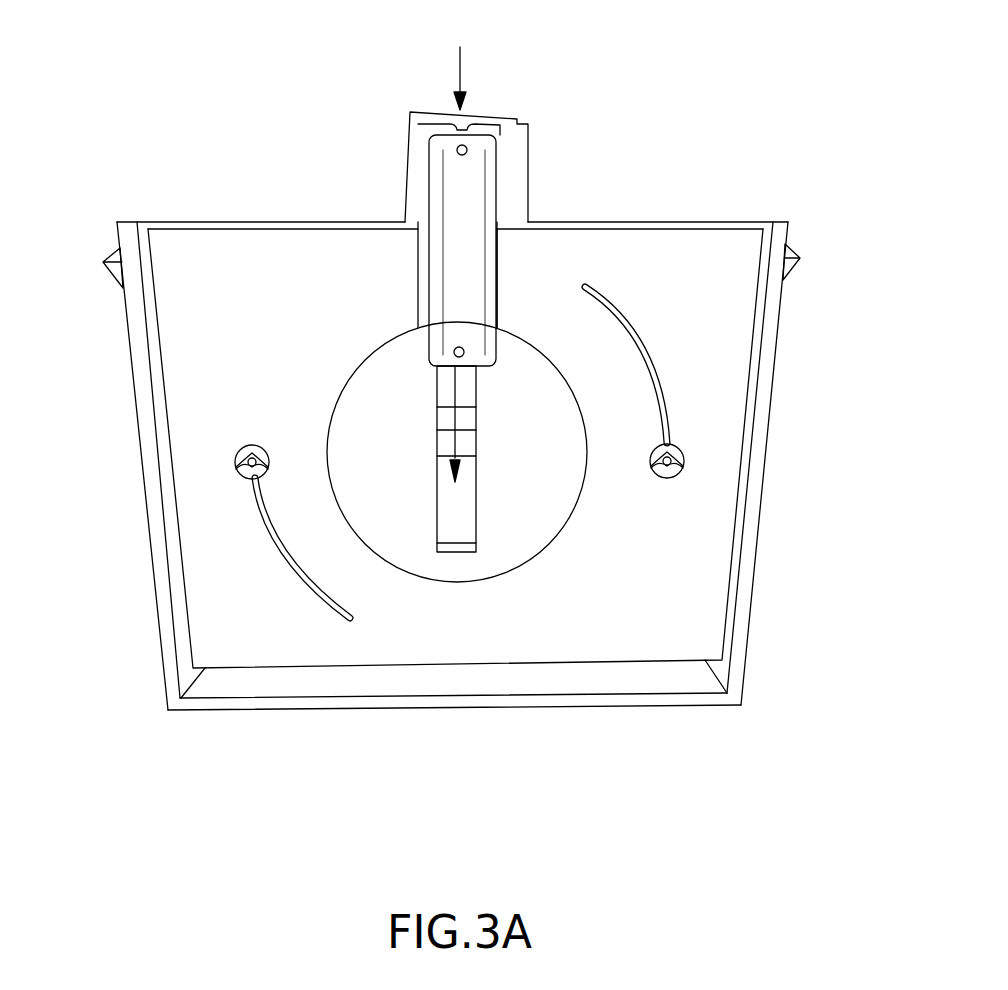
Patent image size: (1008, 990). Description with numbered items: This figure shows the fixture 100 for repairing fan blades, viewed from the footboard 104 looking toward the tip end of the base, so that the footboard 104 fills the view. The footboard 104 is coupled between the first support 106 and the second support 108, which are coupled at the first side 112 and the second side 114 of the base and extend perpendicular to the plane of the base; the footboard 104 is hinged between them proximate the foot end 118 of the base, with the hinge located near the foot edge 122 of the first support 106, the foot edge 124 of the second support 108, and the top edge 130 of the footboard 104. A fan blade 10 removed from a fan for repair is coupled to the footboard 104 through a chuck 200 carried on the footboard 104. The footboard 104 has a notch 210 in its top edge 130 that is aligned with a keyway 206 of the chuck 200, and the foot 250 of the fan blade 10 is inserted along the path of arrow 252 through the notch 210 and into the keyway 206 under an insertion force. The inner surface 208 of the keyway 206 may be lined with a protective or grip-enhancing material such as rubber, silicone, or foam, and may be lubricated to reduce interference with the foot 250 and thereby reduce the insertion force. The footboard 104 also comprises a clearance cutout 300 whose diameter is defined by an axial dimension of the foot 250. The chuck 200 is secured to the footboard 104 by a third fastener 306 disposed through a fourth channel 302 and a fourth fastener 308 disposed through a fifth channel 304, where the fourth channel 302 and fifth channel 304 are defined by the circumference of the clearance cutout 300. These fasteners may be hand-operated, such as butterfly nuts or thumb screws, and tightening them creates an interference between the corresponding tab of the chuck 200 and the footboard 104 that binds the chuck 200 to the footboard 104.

The fan blade 10 is at (520, 100).
The fixture 100 is at (745, 82).
The footboard 104 is at (455, 448).
The first support 106 is at (110, 454).
The second support 108 is at (810, 459).
The first side 112 is at (168, 708).
The second side 114 is at (743, 698).
The foot end 118 is at (520, 706).
The foot edge 122 is at (157, 518).
The foot edge 124 is at (757, 472).
The top edge 130 is at (322, 221).
The chuck 200 is at (495, 459).
The keyway 206 is at (460, 508).
The inner surface 208 is at (477, 466).
The notch 210 is at (498, 272).
The foot 250 is at (482, 180).
The arrow 252 is at (453, 390).
The clearance cutout 300 is at (370, 352).
The fourth channel 302 is at (637, 342).
The fifth channel 304 is at (270, 532).
The third fastener 306 is at (673, 478).
The fourth fastener 308 is at (251, 446).